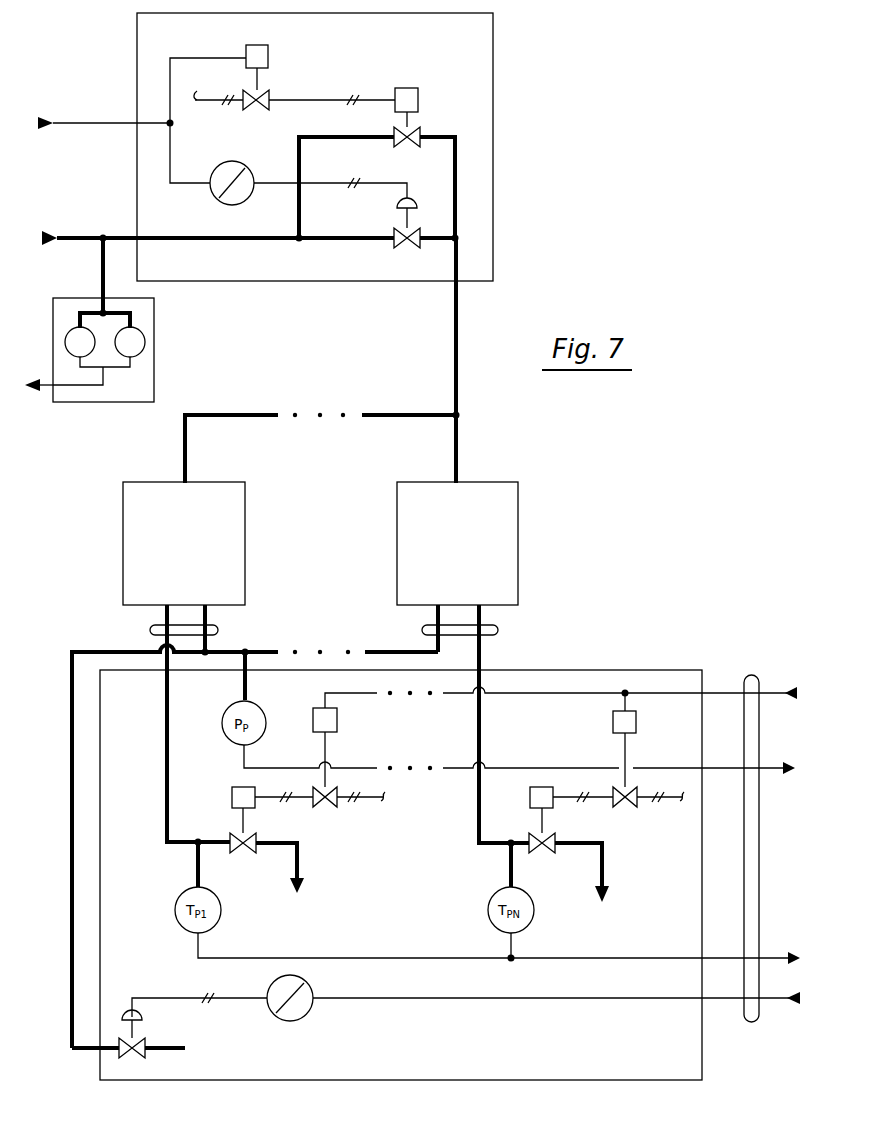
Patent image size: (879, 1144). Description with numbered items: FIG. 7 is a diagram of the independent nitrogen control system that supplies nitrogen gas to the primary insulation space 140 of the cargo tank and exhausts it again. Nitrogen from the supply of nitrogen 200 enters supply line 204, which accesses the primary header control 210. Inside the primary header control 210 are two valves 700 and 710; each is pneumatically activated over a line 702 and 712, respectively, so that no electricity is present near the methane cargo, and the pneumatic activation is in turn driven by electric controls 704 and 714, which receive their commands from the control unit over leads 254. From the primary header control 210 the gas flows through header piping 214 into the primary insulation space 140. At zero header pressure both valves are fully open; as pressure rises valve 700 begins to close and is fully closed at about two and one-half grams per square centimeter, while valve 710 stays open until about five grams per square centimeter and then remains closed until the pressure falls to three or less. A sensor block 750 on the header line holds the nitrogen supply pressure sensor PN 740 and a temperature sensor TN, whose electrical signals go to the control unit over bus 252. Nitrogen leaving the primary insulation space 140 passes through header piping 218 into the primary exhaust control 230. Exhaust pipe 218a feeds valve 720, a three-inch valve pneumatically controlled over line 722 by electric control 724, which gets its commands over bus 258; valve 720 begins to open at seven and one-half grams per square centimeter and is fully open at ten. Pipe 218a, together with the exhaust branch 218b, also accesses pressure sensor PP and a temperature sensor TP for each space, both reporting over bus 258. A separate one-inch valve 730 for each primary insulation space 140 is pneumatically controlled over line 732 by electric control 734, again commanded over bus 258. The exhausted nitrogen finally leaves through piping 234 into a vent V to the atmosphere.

The primary header control 210 is at (493, 143).
The leads 254 is at (110, 123).
The electric control 714 is at (268, 52).
The pneumatic activation line 712 is at (372, 98).
The valve 710 is at (418, 130).
The electric control 704 is at (230, 161).
The pneumatic activation line 702 is at (372, 183).
The valve 700 is at (394, 234).
The supply line 204 is at (120, 236).
The sensor unit 750 is at (62, 302).
The supply of nitrogen 200 is at (140, 404).
The pressure sensor 740 is at (145, 335).
The bus 252 is at (44, 390).
The header piping 214 is at (456, 338).
The primary insulation space 140 is at (218, 482).
The header piping 218 is at (150, 630).
The exhaust pipe 218a is at (72, 745).
The exhaust line 218b is at (167, 690).
The primary exhaust control 230 is at (702, 1043).
The electric control 734 is at (336, 790).
The pneumatic control line 732 is at (258, 787).
The valve 730 is at (258, 836).
The piping 234 is at (300, 860).
The bus 258 is at (752, 675).
The pneumatic control line 722 is at (137, 996).
The electric control 724 is at (305, 1014).
The valve 720 is at (140, 1057).